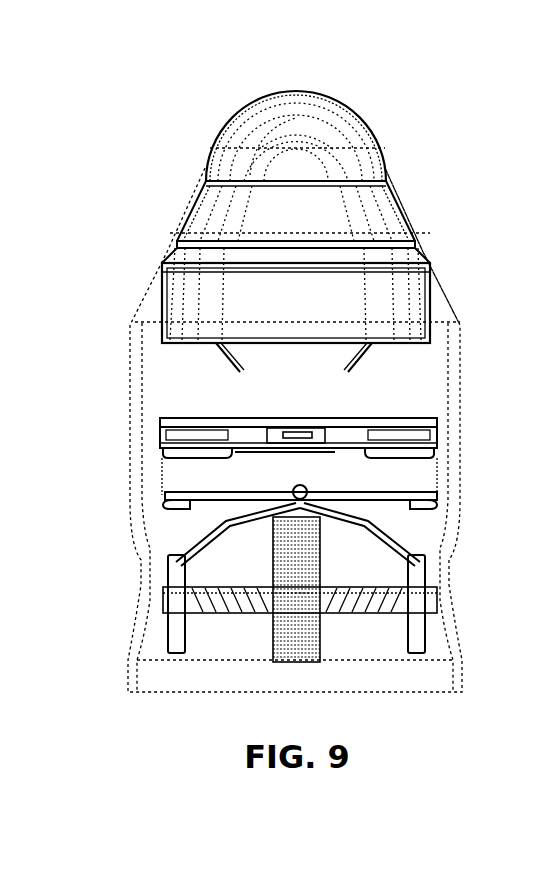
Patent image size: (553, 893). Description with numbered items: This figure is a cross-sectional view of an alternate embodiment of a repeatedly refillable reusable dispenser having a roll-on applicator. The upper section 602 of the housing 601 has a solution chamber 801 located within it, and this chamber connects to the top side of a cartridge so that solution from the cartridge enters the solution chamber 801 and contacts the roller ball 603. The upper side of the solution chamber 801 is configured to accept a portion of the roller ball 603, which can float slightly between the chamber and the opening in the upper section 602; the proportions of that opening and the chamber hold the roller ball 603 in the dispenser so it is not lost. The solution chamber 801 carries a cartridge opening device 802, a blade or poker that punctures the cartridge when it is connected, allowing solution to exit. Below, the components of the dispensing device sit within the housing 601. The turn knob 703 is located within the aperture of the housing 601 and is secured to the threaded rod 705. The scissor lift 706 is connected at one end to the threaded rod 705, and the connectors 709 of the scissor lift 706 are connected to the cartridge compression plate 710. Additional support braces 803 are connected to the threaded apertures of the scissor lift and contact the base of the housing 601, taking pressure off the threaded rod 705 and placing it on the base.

The housing 601 is at (112, 374).
The upper section 602 is at (421, 238).
The roller ball 603 is at (352, 104).
The turn knob 703 is at (272, 645).
The threaded rod 705 is at (368, 618).
The scissor lift 706 is at (437, 540).
The connectors 709 is at (160, 498).
The cartridge compression plate 710 is at (158, 433).
The solution chamber 801 is at (166, 276).
The cartridge opening device 802 is at (218, 350).
The support braces 803 is at (168, 640).